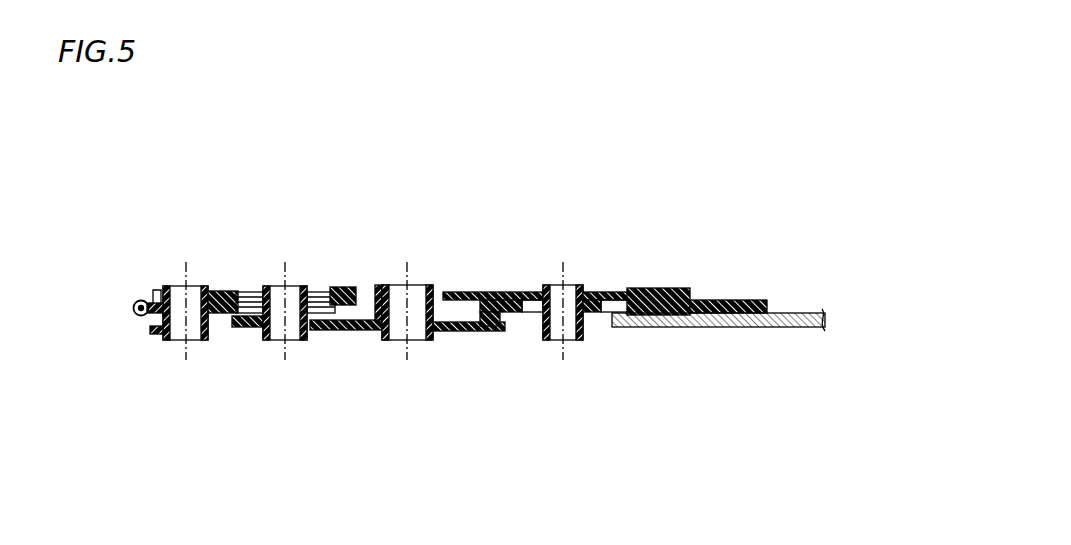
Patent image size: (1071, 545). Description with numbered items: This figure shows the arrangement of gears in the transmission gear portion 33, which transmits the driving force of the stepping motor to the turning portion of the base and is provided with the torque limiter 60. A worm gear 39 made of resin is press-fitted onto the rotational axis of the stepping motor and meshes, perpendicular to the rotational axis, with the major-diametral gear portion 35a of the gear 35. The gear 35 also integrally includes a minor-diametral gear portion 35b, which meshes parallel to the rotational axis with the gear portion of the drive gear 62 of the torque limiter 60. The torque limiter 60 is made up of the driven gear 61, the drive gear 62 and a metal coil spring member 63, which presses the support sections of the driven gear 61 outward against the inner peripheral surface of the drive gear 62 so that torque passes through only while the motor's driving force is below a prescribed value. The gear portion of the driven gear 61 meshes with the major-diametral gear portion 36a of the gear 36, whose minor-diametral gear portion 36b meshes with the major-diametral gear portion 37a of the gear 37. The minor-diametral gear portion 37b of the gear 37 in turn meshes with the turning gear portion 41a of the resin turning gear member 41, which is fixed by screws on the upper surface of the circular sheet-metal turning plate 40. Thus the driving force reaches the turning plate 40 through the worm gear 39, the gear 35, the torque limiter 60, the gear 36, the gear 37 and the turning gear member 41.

The transmission gear portion 33 is at (562, 168).
The gear 35 is at (195, 340).
The major-diametral gear portion 35a is at (150, 332).
The minor-diametral gear portion 35b is at (157, 287).
The gear 36 is at (420, 341).
The major-diametral gear portion 36a is at (365, 331).
The minor-diametral gear portion 36b is at (375, 283).
The gear 37 is at (572, 341).
The major-diametral gear portion 37a is at (480, 283).
The minor-diametral gear portion 37b is at (491, 328).
The worm gear 39 is at (140, 300).
The turning plate 40 is at (740, 329).
The turning gear member 41 is at (735, 282).
The turning gear portion 41a is at (641, 330).
The torque limiter 60 is at (276, 264).
The driven gear 61 is at (258, 328).
The drive gear 62 is at (222, 291).
The spring member 63 is at (251, 291).